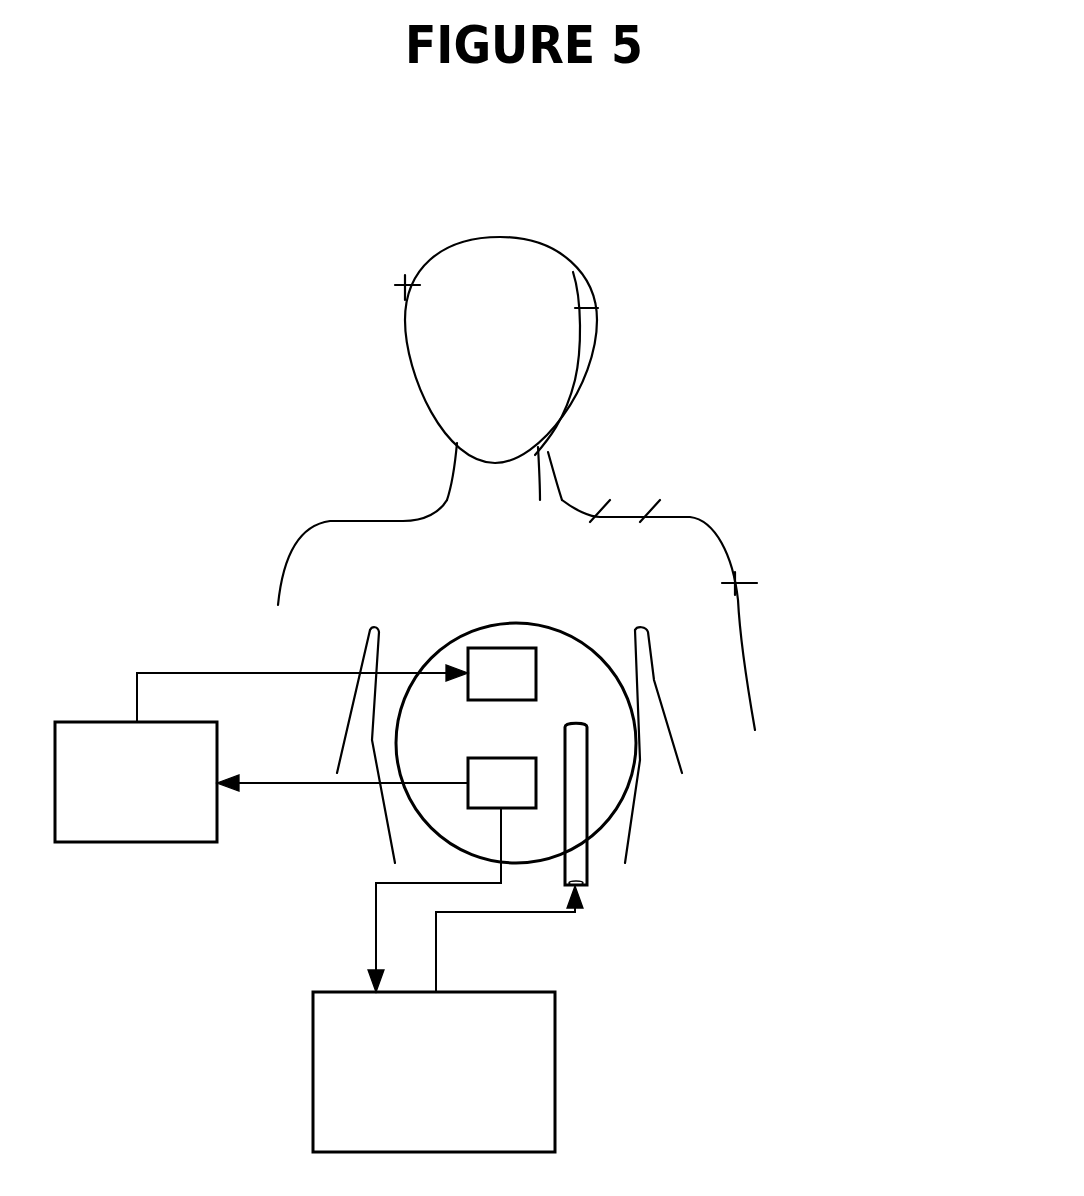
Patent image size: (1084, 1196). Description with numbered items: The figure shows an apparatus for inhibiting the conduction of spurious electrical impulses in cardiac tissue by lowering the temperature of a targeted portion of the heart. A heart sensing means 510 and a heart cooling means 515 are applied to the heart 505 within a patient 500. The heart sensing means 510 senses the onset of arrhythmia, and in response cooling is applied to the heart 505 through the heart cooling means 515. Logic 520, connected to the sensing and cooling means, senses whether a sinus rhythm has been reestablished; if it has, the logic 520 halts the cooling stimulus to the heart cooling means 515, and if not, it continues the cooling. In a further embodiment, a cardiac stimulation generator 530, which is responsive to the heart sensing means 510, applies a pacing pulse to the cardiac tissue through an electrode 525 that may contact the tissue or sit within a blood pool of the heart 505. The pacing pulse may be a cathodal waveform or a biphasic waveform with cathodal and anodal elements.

The patient 500 is at (672, 577).
The heart 505 is at (660, 720).
The heart sensing means 510 is at (468, 808).
The heart cooling means 515 is at (497, 648).
The logic 520 is at (136, 782).
The electrode 525 is at (587, 845).
The cardiac stimulation generator 530 is at (434, 1072).